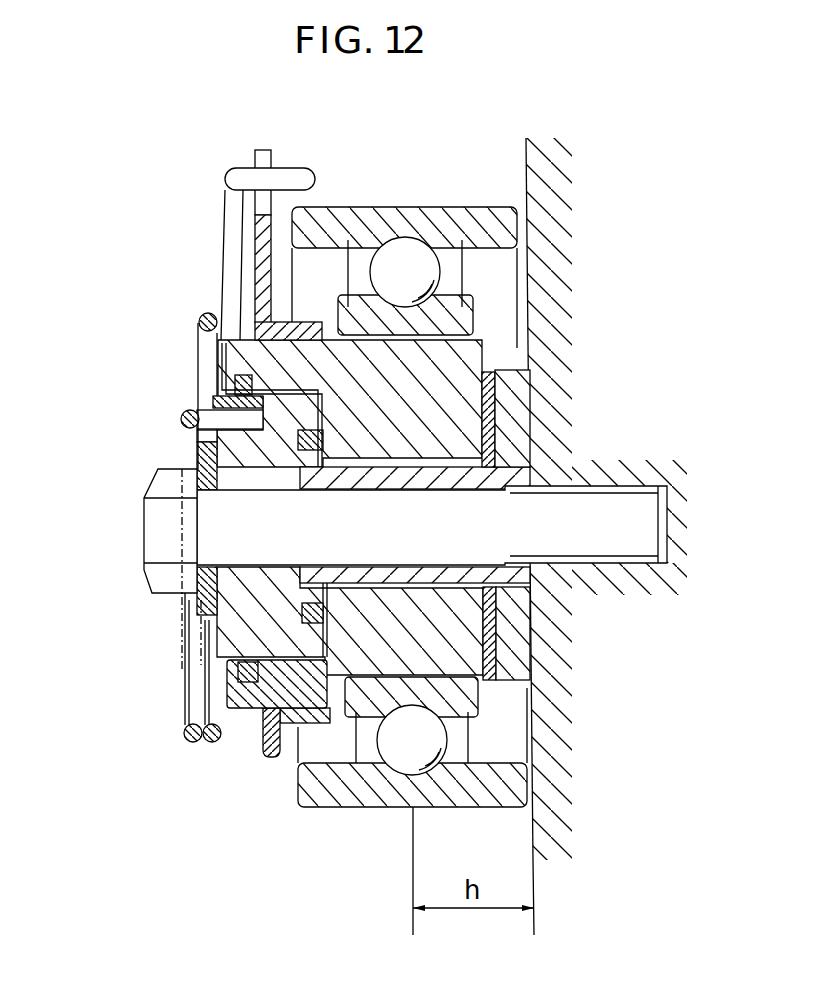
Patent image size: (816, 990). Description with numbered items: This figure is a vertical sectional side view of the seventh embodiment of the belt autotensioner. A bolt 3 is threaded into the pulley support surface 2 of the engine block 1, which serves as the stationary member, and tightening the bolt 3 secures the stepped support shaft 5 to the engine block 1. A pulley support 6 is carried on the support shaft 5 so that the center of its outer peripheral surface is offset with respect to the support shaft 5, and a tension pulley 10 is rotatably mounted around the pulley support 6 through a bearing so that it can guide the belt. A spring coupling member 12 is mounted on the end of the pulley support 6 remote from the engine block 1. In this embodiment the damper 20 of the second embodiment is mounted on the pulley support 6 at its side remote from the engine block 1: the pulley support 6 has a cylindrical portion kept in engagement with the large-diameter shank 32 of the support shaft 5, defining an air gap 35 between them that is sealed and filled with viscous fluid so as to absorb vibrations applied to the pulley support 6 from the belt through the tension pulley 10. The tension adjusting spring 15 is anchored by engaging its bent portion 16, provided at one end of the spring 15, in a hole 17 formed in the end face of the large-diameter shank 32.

The engine block 1 is at (556, 150).
The pulley support surface 2 is at (525, 190).
The bolt 3 is at (168, 547).
The support shaft 5 is at (527, 450).
The pulley support 6 is at (453, 368).
The tension pulley 10 is at (413, 217).
The spring coupling member 12 is at (260, 230).
The tension adjusting spring 15 is at (184, 735).
The bent portion 16 is at (218, 413).
The hole 17 is at (192, 429).
The damper 20 is at (288, 389).
The large-diameter shank 32 is at (239, 474).
The air gap 35 is at (283, 666).